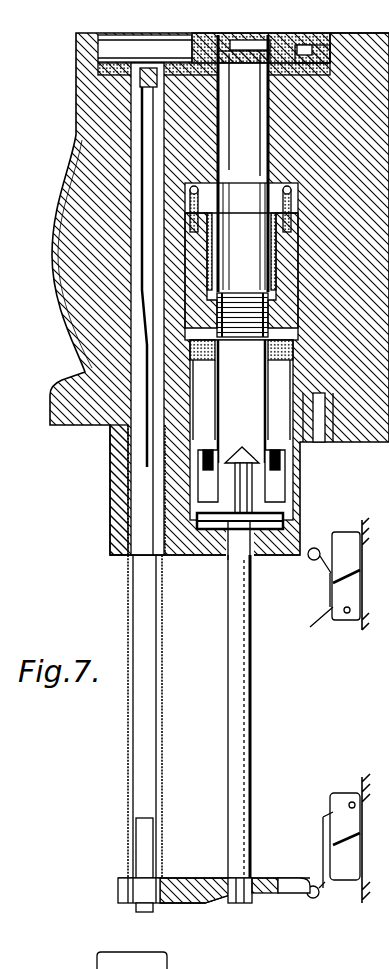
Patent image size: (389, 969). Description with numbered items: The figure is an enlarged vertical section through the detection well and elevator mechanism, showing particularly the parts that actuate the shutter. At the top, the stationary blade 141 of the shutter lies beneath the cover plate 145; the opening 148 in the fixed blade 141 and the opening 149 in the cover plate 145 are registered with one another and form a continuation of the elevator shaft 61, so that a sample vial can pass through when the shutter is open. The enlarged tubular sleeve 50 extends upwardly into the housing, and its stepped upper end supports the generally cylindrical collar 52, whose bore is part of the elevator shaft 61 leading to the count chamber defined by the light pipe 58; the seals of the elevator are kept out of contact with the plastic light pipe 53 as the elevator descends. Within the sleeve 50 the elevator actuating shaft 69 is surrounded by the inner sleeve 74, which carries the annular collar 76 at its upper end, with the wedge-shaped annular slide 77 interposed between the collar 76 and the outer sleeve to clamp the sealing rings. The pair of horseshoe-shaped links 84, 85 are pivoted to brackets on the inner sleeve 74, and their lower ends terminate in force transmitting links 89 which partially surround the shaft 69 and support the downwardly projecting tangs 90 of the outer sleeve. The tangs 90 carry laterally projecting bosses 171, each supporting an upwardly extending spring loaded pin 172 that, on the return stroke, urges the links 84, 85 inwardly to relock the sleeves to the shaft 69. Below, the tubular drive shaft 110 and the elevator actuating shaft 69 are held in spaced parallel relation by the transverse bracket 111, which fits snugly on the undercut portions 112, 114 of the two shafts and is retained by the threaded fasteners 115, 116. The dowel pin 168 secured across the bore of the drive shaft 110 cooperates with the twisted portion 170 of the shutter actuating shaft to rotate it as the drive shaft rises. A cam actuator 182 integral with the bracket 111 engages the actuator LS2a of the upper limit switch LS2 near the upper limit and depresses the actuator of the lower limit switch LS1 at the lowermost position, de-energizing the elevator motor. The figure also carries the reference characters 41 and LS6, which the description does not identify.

The opening in cover plate 149 is at (219, 34).
The opening in stationary blade 148 is at (255, 40).
The stationary blade 141 is at (307, 38).
The cover plate 145 is at (327, 33).
The tubular sleeve 50 is at (263, 53).
The valve stem 41 is at (219, 110).
The elevator shaft 61 is at (264, 148).
The light pipe 58 is at (232, 340).
The annular collar 76 is at (240, 209).
The inner sleeve 74 is at (241, 251).
The wedge-shaped annular slide 77 is at (267, 270).
The plastic light pipe 53 is at (242, 260).
The twisted portion 170 is at (137, 288).
The cylindrical collar 52 is at (241, 401).
The tangs 90 is at (242, 471).
The spring loaded pin 172 is at (280, 464).
The bosses 171 is at (278, 493).
The horseshoe-shaped link 84 is at (283, 518).
The force transmitting links 89 is at (250, 513).
The horseshoe-shaped link 85 is at (205, 576).
The dowel pin 168 is at (110, 452).
The elevator actuating shaft 69 is at (253, 707).
The tubular drive shaft 110 is at (163, 752).
The actuator of upper limit switch LS2a is at (305, 587).
The upper limit switch LS2 is at (332, 618).
The lower limit switch LS1 is at (333, 812).
The limit switch lever LS6 is at (328, 835).
The cam actuator 182 is at (293, 883).
The transverse bracket 111 is at (210, 862).
The threaded fastener 115 is at (143, 915).
The undercut portion 112 is at (163, 901).
The threaded fastener 116 is at (237, 905).
The undercut portion 114 is at (257, 893).